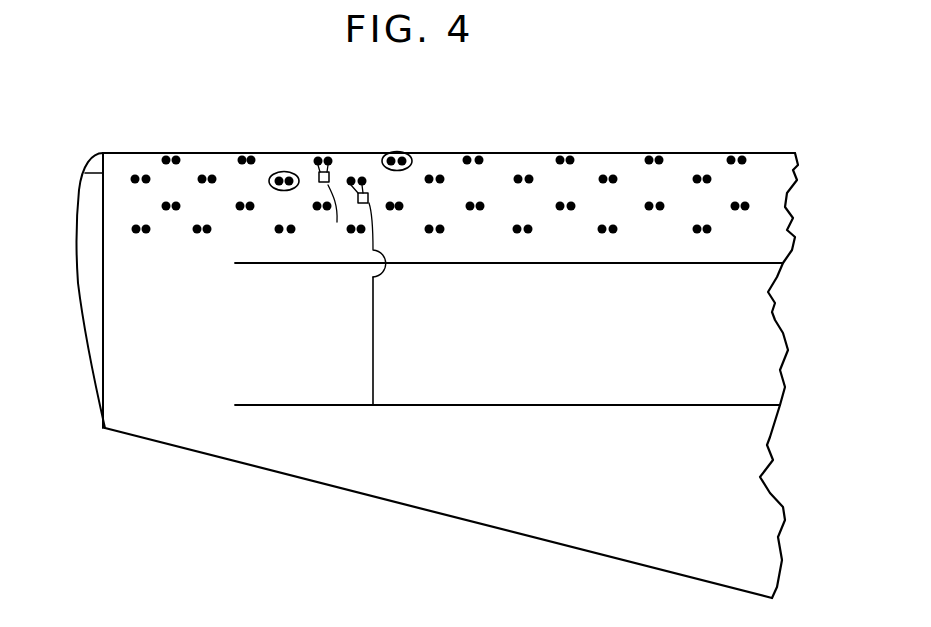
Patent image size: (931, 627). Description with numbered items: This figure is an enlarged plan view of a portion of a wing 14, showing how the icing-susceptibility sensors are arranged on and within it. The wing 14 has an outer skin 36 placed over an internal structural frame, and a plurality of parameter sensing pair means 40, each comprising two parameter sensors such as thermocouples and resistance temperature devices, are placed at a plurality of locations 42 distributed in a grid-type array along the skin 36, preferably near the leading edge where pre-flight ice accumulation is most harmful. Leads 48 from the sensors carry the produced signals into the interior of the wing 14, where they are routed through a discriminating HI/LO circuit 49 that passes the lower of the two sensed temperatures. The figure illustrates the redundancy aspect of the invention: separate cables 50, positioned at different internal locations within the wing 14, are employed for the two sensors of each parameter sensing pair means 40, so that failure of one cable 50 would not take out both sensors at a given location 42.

The wing 14 is at (435, 361).
The outer skin 36 is at (592, 161).
The parameter sensing pair means 40 is at (412, 153).
The location 42 is at (284, 171).
The leads 48 is at (335, 263).
The discriminating HI/LO circuit 49 is at (369, 196).
The cable 50 is at (608, 264).